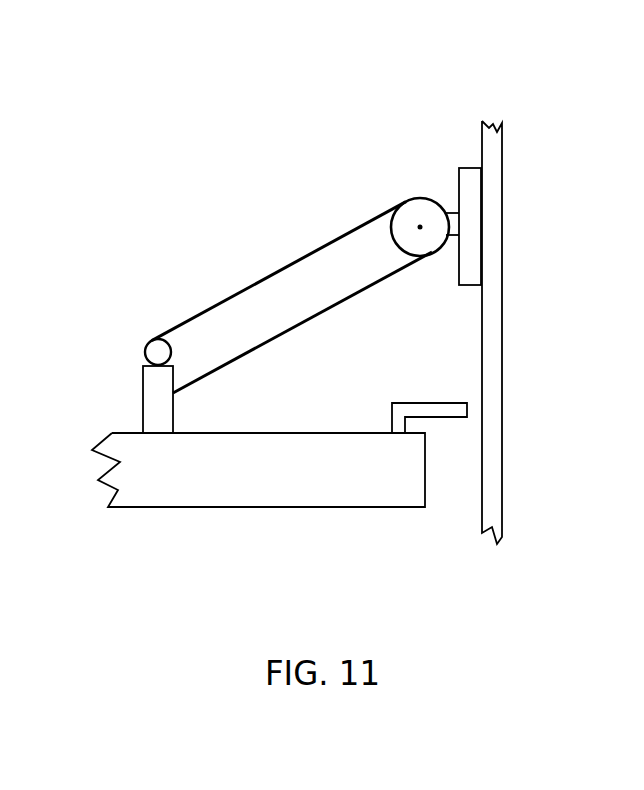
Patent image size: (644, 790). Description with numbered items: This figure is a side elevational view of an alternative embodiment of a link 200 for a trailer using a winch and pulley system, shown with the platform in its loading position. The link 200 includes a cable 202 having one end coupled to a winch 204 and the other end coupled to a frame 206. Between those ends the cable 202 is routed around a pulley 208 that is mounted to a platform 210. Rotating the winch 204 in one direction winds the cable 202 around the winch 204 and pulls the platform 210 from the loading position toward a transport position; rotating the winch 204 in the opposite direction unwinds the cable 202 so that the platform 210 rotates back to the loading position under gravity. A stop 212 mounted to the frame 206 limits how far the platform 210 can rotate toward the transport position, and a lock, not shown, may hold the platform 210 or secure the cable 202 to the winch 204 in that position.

The link 200 is at (221, 284).
The cable 202 is at (313, 320).
The winch 204 is at (145, 347).
The frame 206 is at (152, 410).
The pulley 208 is at (420, 226).
The platform 210 is at (497, 193).
The stop 212 is at (405, 418).